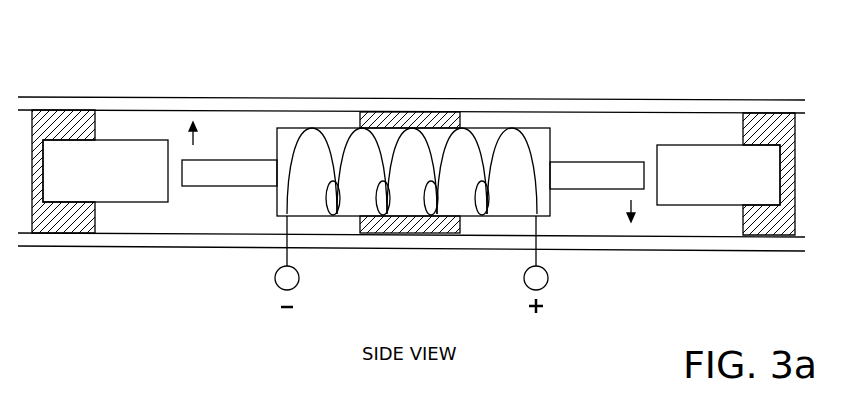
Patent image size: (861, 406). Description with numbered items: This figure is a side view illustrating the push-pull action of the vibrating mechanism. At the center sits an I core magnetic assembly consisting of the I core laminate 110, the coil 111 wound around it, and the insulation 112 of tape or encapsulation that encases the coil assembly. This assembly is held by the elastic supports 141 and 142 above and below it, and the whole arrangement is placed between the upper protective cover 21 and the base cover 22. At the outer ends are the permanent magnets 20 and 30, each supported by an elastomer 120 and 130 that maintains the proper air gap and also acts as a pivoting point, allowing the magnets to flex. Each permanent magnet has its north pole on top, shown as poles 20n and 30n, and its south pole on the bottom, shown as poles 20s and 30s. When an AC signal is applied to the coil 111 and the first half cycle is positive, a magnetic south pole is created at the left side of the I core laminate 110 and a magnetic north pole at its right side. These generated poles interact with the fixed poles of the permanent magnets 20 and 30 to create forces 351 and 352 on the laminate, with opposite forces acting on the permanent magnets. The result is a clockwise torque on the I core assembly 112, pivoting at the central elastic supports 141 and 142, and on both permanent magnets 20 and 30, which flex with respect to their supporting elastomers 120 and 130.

The permanent magnet 20 is at (55, 150).
The north pole of permanent magnet 20n is at (133, 140).
The south pole of permanent magnet 20s is at (138, 205).
The upper protective cover 21 is at (648, 100).
The base cover 22 is at (163, 247).
The permanent magnet 30 is at (725, 190).
The north pole of permanent magnet 30n is at (693, 145).
The south pole of permanent magnet 30s is at (700, 207).
The I core laminate 110 is at (253, 175).
The coil 111 is at (423, 147).
The insulation 112 is at (490, 128).
The elastomer 120 is at (43, 233).
The elastomer 130 is at (780, 125).
The elastic support 141 is at (367, 112).
The elastic support 142 is at (375, 233).
The force 351 is at (642, 220).
The force 352 is at (182, 130).